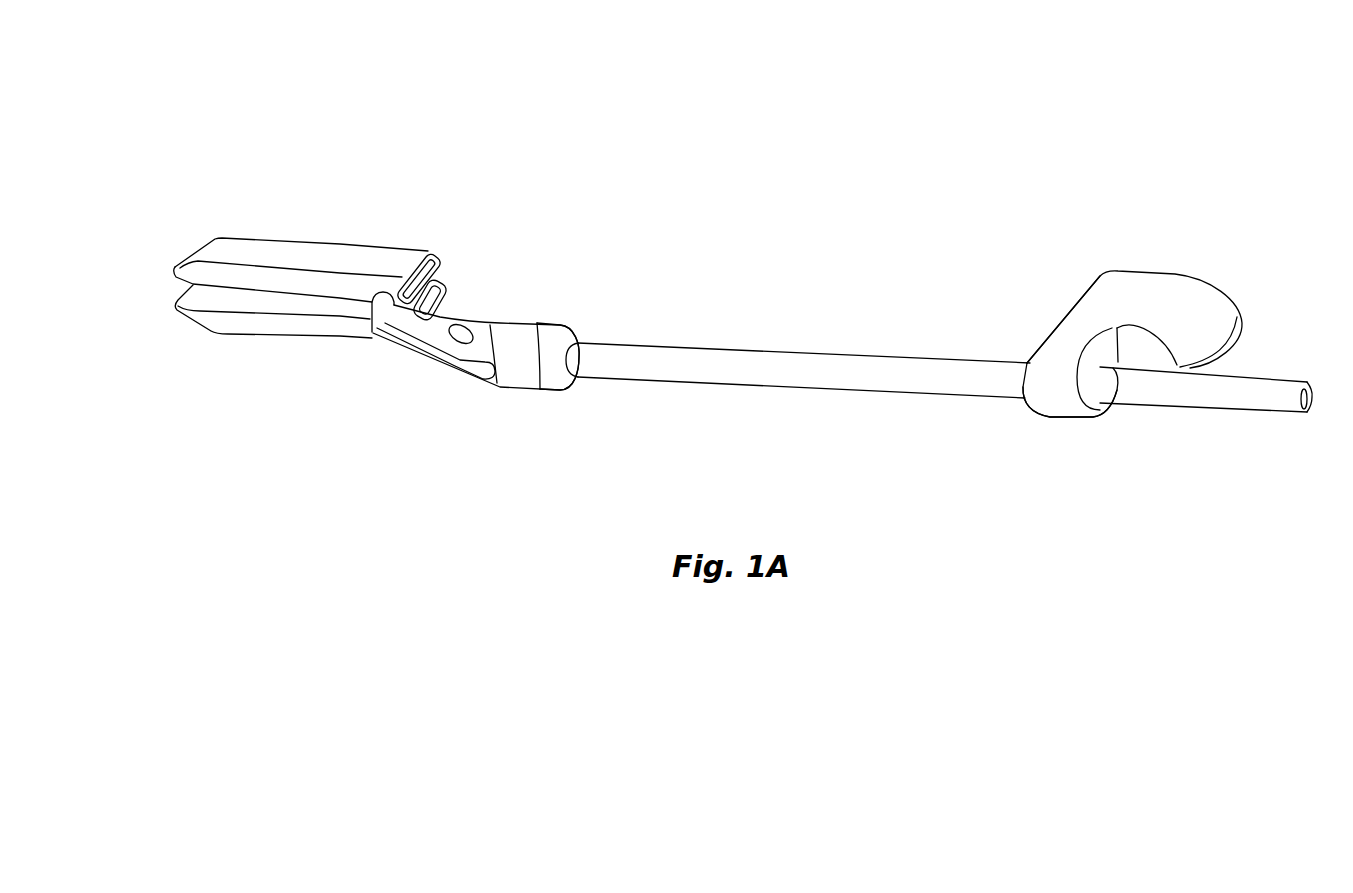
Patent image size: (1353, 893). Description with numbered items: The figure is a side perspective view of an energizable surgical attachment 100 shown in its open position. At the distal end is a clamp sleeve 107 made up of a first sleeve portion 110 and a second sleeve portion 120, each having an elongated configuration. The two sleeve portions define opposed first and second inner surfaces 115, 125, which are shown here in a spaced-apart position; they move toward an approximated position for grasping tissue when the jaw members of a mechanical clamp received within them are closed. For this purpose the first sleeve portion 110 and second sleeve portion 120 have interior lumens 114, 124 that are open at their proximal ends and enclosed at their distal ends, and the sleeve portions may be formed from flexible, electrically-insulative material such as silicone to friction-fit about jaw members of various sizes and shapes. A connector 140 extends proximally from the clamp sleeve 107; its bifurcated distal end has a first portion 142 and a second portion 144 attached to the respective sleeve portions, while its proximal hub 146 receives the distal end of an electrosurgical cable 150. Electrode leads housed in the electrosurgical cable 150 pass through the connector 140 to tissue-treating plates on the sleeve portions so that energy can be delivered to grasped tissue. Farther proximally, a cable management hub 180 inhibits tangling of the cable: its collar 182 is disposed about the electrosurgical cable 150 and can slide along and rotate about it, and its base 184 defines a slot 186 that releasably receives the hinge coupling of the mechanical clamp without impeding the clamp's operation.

The energizable surgical attachment 100 is at (844, 136).
The clamp sleeve 107 is at (159, 270).
The first sleeve portion 110 is at (310, 241).
The first interior lumen 114 is at (440, 262).
The first inner surface 115 is at (443, 283).
The second sleeve portion 120 is at (285, 336).
The second interior lumen 124 is at (440, 295).
The second inner surface 125 is at (443, 308).
The connector 140 is at (507, 392).
The first portion 142 is at (406, 332).
The second portion 144 is at (442, 376).
The proximal hub 146 is at (562, 391).
The electrosurgical cable 150 is at (837, 350).
The cable management hub 180 is at (1148, 272).
The collar 182 is at (1063, 418).
The base 184 is at (1238, 325).
The slot 186 is at (1073, 305).